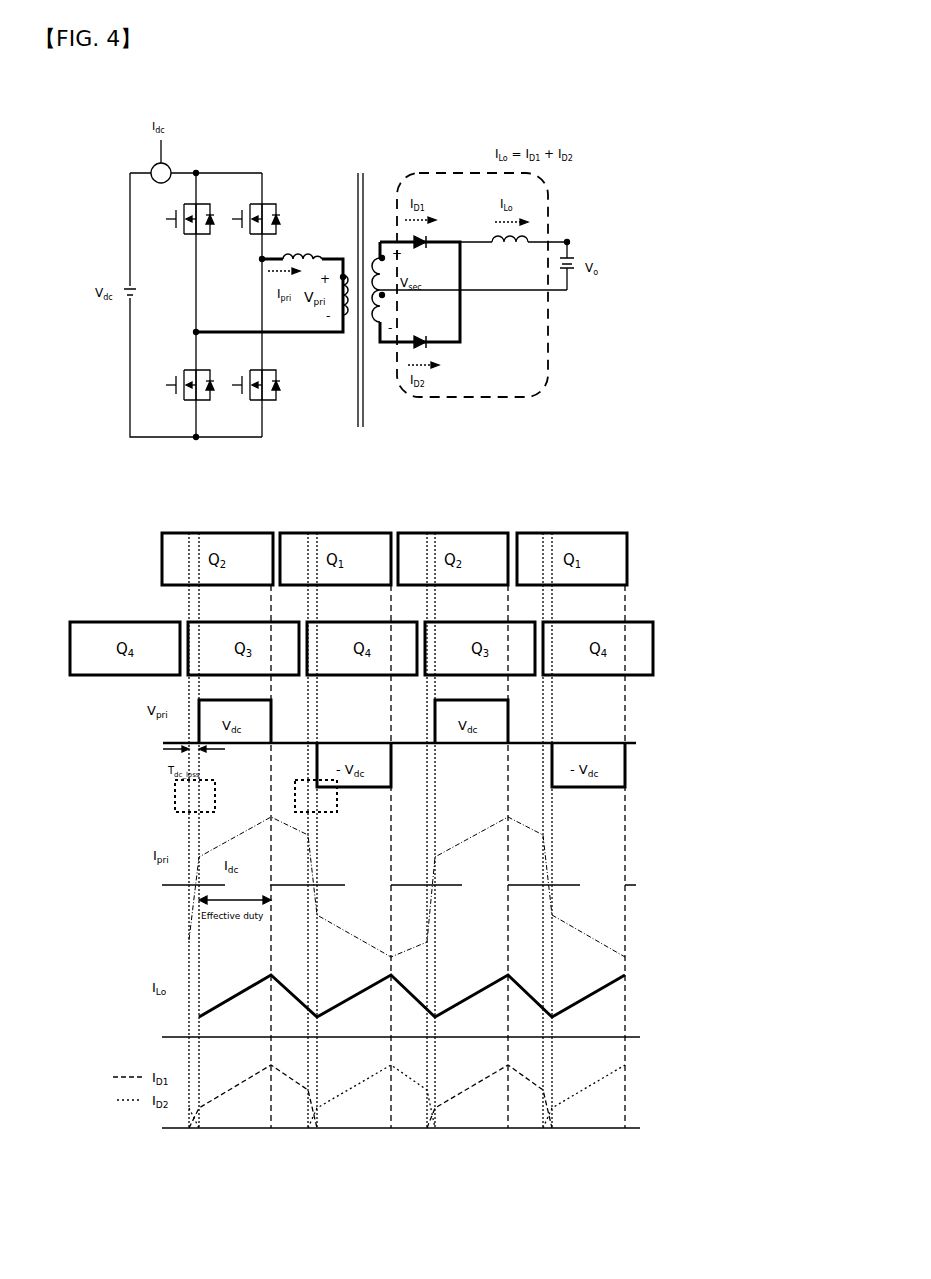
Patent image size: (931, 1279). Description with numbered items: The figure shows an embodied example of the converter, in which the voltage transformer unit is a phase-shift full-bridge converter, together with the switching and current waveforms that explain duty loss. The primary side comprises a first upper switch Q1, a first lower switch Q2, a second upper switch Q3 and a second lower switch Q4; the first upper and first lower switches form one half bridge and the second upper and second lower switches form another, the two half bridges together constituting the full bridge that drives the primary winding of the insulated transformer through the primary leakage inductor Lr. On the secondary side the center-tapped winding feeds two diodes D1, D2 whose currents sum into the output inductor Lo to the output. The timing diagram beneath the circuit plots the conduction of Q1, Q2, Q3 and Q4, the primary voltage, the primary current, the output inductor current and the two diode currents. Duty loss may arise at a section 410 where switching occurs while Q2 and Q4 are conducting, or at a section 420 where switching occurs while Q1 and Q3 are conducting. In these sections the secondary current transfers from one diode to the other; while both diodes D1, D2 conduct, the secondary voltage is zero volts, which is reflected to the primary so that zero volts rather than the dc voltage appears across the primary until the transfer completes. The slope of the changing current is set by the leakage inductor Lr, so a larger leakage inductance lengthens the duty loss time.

The duty loss section 410 is at (175, 795).
The duty loss section 420 is at (295, 792).
The first upper switch Q1 is at (188, 227).
The first lower switch Q2 is at (188, 393).
The second upper switch Q3 is at (254, 227).
The second lower switch Q4 is at (254, 393).
The diode D1 is at (422, 252).
The diode D2 is at (422, 330).
The leakage inductor Lr is at (302, 246).
The output inductor Lo is at (510, 254).